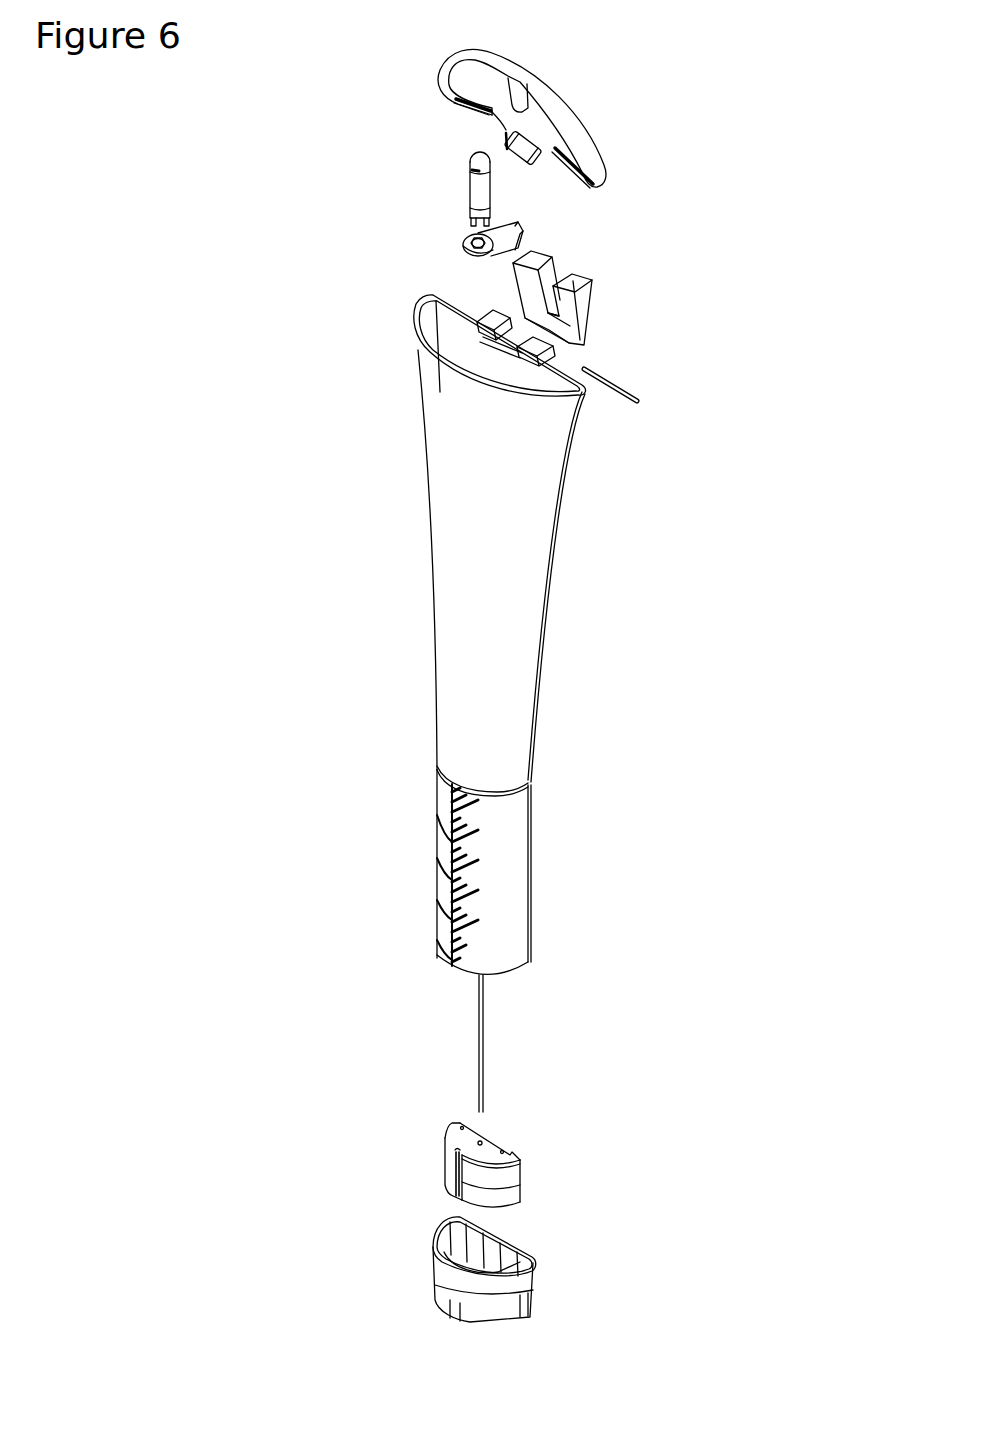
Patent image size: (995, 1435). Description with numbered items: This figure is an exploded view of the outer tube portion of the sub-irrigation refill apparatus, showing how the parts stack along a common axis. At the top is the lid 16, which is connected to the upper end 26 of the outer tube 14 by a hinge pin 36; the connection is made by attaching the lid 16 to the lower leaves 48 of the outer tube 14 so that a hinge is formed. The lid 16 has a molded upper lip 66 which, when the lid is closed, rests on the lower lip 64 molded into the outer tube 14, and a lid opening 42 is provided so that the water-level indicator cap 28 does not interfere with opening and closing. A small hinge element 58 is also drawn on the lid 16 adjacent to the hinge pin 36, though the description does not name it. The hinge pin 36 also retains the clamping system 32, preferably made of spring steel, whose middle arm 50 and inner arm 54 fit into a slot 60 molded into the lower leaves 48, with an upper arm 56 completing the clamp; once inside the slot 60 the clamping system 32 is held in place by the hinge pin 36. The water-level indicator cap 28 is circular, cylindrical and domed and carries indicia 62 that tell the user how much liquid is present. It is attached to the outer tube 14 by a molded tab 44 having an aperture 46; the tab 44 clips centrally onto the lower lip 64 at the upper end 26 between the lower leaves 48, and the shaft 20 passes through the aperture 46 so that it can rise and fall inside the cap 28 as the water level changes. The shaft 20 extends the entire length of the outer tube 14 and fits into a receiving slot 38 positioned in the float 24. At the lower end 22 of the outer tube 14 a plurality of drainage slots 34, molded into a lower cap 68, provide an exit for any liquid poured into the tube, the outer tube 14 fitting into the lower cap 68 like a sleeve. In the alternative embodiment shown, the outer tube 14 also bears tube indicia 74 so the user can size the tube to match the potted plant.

The outer tube 14 is at (436, 683).
The lid 16 is at (602, 148).
The shaft 20 is at (488, 1060).
The lower end 22 is at (532, 950).
The float 24 is at (522, 1170).
The upper end 26 is at (413, 335).
The water-level indicator cap 28 is at (470, 188).
The clamping system 32 is at (592, 300).
The drainage slots 34 is at (537, 1280).
The hinge pin 36 is at (640, 402).
The receiving slot 38 is at (443, 1188).
The lid opening 42 is at (522, 90).
The molded tab 44 is at (520, 237).
The aperture 46 is at (470, 238).
The lower leaves 48 is at (550, 358).
The middle arm 50 is at (523, 343).
The inner arm 54 is at (563, 318).
The upper arm 56 is at (588, 278).
The cylinder 58 is at (538, 163).
The slot 60 is at (523, 355).
The indicia 62 is at (470, 162).
The lower lip 64 is at (433, 363).
The upper lip 66 is at (462, 54).
The lower cap 68 is at (436, 1267).
The tube indicia 74 is at (437, 863).